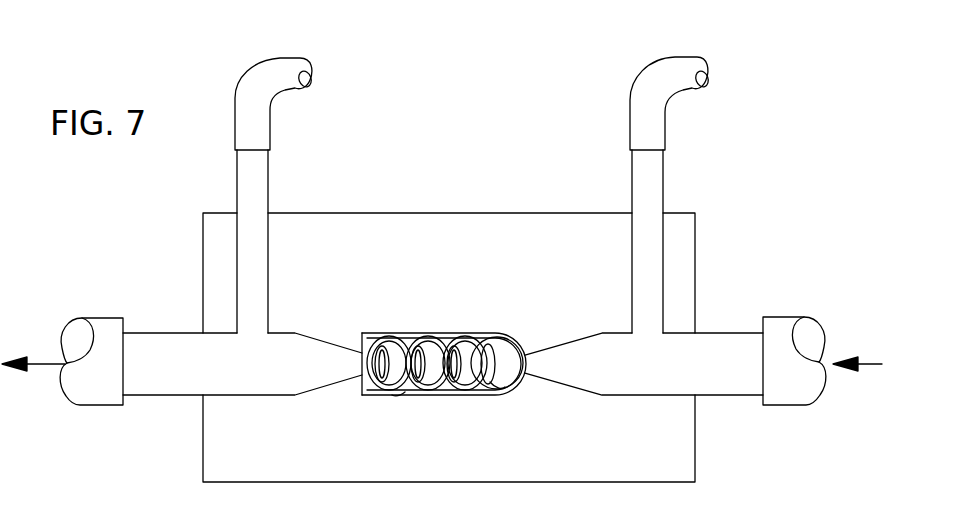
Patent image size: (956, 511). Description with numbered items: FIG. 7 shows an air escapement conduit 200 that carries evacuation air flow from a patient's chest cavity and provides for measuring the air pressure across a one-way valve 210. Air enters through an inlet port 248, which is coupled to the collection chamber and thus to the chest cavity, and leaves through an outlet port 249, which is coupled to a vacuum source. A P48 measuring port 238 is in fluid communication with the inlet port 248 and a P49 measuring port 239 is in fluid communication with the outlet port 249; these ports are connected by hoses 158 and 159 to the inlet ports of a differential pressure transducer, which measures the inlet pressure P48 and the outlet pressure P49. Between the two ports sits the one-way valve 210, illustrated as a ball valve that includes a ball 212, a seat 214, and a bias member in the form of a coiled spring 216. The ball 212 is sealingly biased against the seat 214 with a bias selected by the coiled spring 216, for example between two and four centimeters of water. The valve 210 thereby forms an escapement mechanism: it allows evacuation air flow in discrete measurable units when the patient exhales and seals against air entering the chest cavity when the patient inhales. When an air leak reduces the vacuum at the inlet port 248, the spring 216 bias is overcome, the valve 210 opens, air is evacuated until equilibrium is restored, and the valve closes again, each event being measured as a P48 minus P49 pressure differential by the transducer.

The air escapement conduit 200 is at (388, 93).
The hose 159 is at (250, 73).
The hose 158 is at (645, 73).
The P49 measuring port 239 is at (237, 168).
The P48 measuring port 238 is at (631, 170).
The outlet pressure P49 is at (258, 190).
The inlet pressure P48 is at (653, 192).
The outlet port 249 is at (180, 333).
The inlet port 248 is at (728, 397).
The one-way valve 210 is at (447, 322).
The seat 214 is at (517, 340).
The ball 212 is at (500, 380).
The coiled spring 216 is at (405, 392).